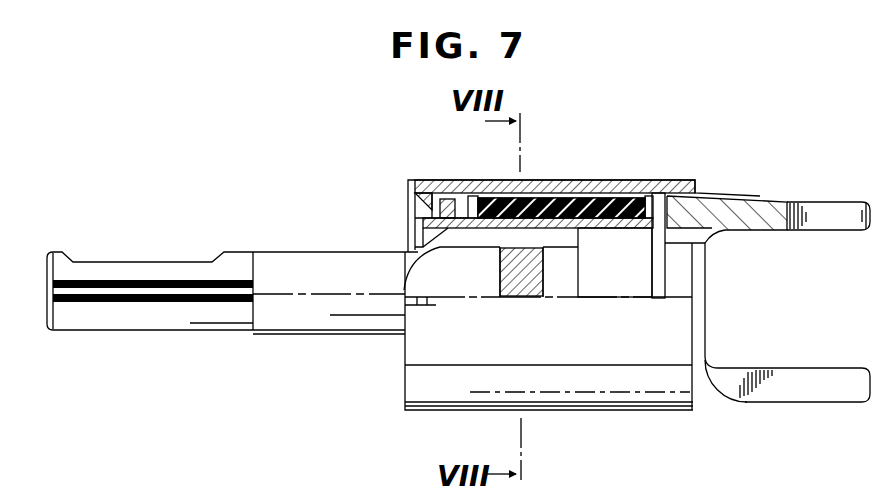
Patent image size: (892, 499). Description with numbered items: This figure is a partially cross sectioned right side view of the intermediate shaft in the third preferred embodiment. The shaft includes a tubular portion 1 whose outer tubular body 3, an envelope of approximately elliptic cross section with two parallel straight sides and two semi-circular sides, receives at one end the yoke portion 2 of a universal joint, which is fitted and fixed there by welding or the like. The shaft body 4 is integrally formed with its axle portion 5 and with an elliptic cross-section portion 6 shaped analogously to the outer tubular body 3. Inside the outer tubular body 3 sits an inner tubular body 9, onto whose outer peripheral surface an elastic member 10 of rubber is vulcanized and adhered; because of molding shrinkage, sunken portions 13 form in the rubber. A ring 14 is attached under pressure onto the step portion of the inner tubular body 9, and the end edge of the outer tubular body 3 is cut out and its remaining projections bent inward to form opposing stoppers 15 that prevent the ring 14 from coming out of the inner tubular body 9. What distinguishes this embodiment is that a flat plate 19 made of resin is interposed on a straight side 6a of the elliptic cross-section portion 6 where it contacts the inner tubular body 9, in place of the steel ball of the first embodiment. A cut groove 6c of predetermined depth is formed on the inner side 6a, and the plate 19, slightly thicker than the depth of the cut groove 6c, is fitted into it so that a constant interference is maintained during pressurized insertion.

The tubular portion 1 is at (618, 182).
The yoke portion 2 is at (734, 201).
The outer tubular body 3 is at (577, 184).
The shaft body 4 is at (328, 338).
The axle portion 5 is at (166, 323).
The elliptic cross-section portion 6 is at (578, 262).
The straight side 6a is at (578, 258).
The cut groove 6c is at (498, 275).
The inner tubular body 9 is at (477, 229).
The elastic member 10 is at (527, 200).
The sunken portion 13 is at (472, 197).
The ring 14 is at (440, 207).
The stopper 15 is at (422, 186).
The flat plate 19 is at (522, 272).